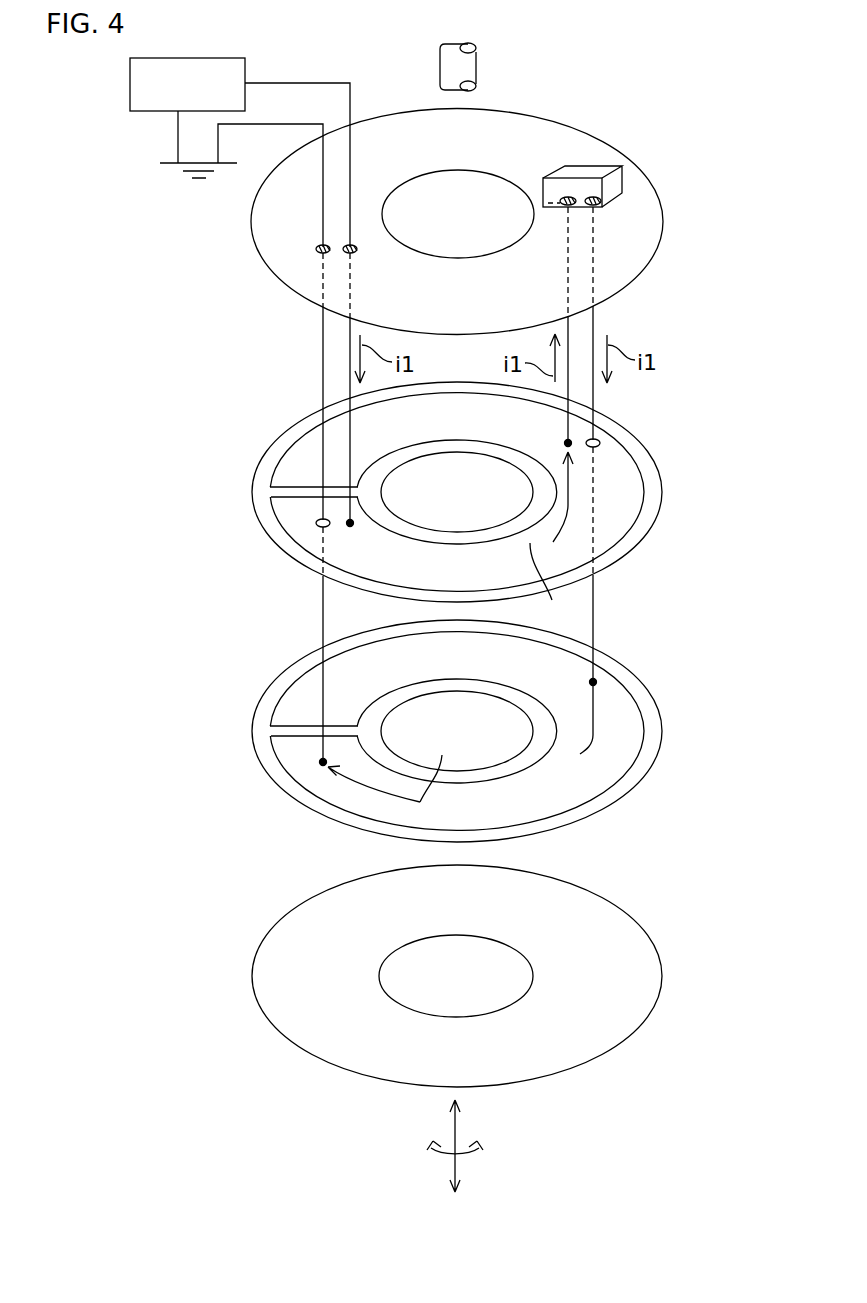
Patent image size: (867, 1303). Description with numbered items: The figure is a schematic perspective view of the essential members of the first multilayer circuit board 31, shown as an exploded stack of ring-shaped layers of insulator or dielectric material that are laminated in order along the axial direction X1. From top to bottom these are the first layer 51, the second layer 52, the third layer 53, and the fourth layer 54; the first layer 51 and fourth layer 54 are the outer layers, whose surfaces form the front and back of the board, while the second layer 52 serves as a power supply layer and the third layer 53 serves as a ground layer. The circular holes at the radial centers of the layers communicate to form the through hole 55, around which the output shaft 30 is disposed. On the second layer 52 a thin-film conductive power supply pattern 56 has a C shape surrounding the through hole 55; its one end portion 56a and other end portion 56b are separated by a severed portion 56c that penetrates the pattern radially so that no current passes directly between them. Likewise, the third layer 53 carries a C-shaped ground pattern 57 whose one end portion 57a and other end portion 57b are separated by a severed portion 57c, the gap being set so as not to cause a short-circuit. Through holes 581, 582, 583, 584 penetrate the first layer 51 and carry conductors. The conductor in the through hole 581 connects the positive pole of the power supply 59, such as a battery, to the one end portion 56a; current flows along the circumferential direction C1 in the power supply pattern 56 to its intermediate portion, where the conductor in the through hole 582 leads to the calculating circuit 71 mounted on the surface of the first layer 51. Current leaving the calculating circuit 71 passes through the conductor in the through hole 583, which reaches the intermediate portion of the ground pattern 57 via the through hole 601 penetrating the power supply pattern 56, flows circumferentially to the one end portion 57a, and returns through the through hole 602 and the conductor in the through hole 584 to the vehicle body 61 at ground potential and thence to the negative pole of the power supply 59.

The output shaft 30 is at (470, 65).
The first multilayer circuit board 31 is at (646, 124).
The first layer 51 is at (617, 270).
The second layer 52 is at (645, 515).
The third layer 53 is at (625, 778).
The fourth layer 54 is at (625, 1012).
The through hole 55 is at (472, 185).
The power supply pattern 56 is at (610, 520).
The one end portion 56a is at (295, 507).
The other end portion 56b is at (300, 470).
The severed portion 56c is at (296, 484).
The ground pattern 57 is at (578, 785).
The one end portion 57a is at (297, 755).
The other end portion 57b is at (300, 712).
The severed portion 57c is at (296, 721).
The power supply 59 is at (130, 86).
The vehicle body 61 is at (176, 163).
The calculating circuit 71 is at (585, 170).
The through hole 581 is at (357, 248).
The through hole 582 is at (565, 198).
The through hole 583 is at (600, 203).
The through hole 584 is at (318, 253).
The through hole 601 is at (602, 447).
The through hole 602 is at (318, 527).
The axial direction X1 is at (458, 1133).
The circumferential direction C1 is at (430, 1148).